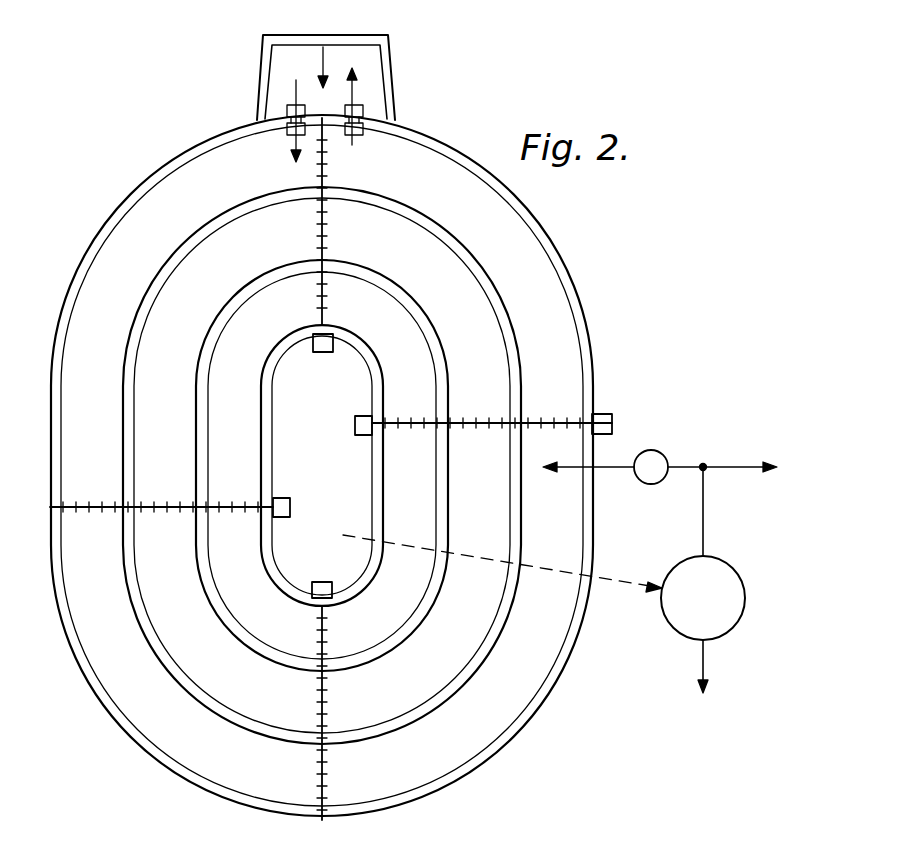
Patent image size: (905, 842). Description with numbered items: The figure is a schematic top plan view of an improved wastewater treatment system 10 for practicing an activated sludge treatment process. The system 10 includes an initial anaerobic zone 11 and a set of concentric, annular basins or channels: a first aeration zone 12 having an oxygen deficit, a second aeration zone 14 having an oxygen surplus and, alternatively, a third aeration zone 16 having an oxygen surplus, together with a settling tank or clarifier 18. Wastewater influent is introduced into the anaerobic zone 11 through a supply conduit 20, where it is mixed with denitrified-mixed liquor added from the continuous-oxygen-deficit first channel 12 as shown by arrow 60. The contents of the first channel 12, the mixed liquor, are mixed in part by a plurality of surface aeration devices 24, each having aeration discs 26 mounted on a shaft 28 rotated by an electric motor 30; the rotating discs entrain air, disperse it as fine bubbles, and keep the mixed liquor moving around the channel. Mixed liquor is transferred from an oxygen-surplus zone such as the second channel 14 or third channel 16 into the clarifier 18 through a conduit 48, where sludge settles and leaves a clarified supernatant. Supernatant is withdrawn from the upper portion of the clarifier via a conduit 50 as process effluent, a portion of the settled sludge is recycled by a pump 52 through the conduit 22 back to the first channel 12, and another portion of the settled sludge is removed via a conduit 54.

The wastewater treatment system 10 is at (108, 174).
The anaerobic zone 11 is at (285, 73).
The first aeration zone 12 is at (427, 154).
The second aeration zone 14 is at (452, 298).
The third aeration zone 16 is at (388, 298).
The clarifier 18 is at (683, 605).
The supply conduit 20 is at (352, 38).
The conduit 22 is at (618, 468).
The surface aeration device 24 is at (298, 232).
The aeration disc 26 is at (324, 223).
The shaft 28 is at (320, 160).
The electric motor 30 is at (330, 343).
The conduit 48 is at (628, 584).
The conduit 50 is at (700, 658).
The pump 52 is at (662, 440).
The conduit 54 is at (747, 462).
The arrow 60 is at (352, 136).